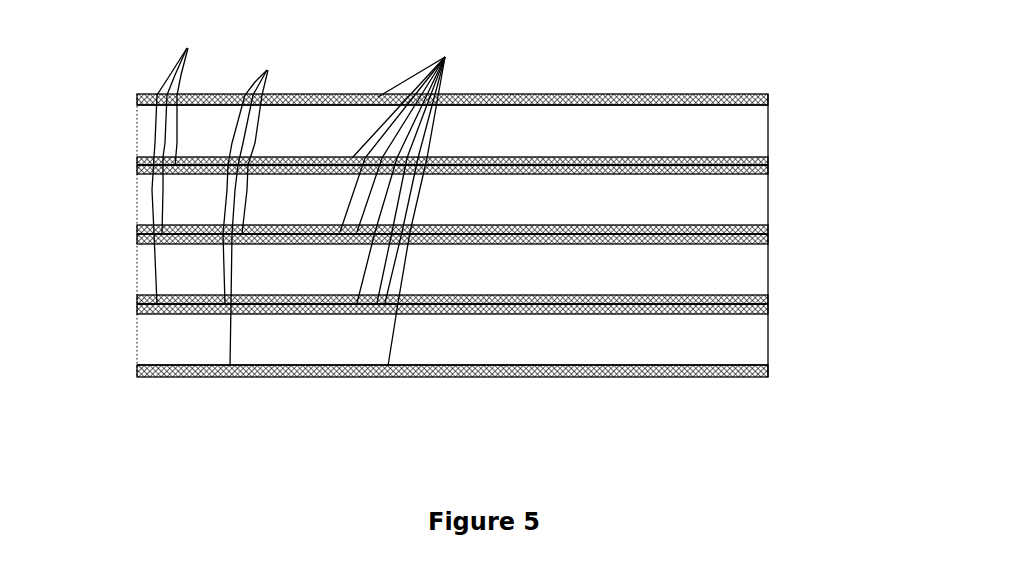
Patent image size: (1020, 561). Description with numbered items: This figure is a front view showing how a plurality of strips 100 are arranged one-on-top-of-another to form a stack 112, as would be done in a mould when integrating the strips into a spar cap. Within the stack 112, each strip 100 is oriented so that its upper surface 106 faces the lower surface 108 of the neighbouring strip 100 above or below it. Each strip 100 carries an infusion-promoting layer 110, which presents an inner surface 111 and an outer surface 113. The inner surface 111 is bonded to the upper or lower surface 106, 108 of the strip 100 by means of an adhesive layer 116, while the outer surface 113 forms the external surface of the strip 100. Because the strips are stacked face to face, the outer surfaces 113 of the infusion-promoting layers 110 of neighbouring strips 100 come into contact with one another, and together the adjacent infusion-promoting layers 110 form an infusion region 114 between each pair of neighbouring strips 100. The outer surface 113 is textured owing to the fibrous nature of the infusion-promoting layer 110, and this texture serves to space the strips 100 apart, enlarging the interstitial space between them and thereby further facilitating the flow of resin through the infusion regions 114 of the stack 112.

The strip 100 is at (781, 130).
The upper surface 106 is at (191, 162).
The lower surface 108 is at (266, 201).
The infusion-promoting layer 110 is at (414, 200).
The inner surface 111 is at (498, 106).
The stack 112 is at (147, 72).
The outer surface 113 is at (568, 93).
The infusion region 114 is at (127, 163).
The adhesive layer 116 is at (622, 157).